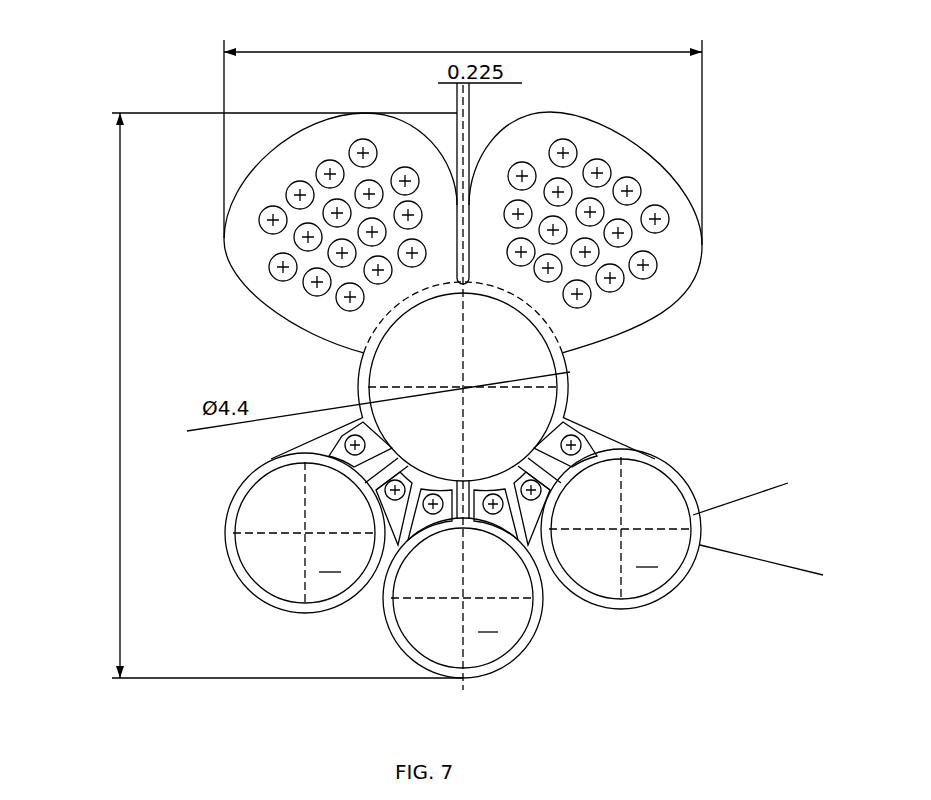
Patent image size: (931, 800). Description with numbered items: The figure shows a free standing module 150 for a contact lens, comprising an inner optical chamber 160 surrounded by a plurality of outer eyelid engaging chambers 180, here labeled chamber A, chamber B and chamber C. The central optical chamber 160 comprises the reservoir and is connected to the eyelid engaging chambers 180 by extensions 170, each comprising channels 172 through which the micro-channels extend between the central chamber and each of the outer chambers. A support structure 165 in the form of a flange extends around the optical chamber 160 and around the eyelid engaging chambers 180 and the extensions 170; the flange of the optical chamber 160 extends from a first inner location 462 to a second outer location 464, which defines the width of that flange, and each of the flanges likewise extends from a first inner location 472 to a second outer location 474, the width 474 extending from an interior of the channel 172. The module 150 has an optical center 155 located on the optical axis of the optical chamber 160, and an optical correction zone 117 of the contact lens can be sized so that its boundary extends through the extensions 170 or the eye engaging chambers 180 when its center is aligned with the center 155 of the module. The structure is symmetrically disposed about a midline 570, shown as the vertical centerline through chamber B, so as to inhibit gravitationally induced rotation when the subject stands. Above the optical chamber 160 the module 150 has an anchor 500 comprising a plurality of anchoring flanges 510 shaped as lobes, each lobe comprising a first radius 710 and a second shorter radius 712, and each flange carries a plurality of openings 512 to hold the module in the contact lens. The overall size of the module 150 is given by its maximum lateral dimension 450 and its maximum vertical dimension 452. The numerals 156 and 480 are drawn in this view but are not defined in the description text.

The free standing module 150 is at (668, 32).
The optical center 155 is at (465, 386).
The wing portion 156 is at (678, 163).
The inner optical chamber 160 is at (442, 359).
The support structure 165 is at (377, 417).
The extension 170 is at (352, 443).
The channel 172 is at (537, 453).
The eyelid engaging chamber 180 is at (294, 521).
The maximum lateral dimension 450 is at (500, 52).
The maximum vertical dimension 452 is at (120, 440).
The first inner location 462 is at (360, 397).
The second outer location 464 is at (358, 370).
The first inner location 472 is at (748, 493).
The second outer location 474 is at (808, 570).
The ring C 480 is at (237, 490).
The anchor 500 is at (372, 107).
The anchoring flange 510 is at (542, 120).
The opening 512 is at (300, 182).
The midline 570 is at (465, 648).
The first radius 710 is at (630, 143).
The second shorter radius 712 is at (647, 320).
The optical correction zone 117 is at (570, 402).